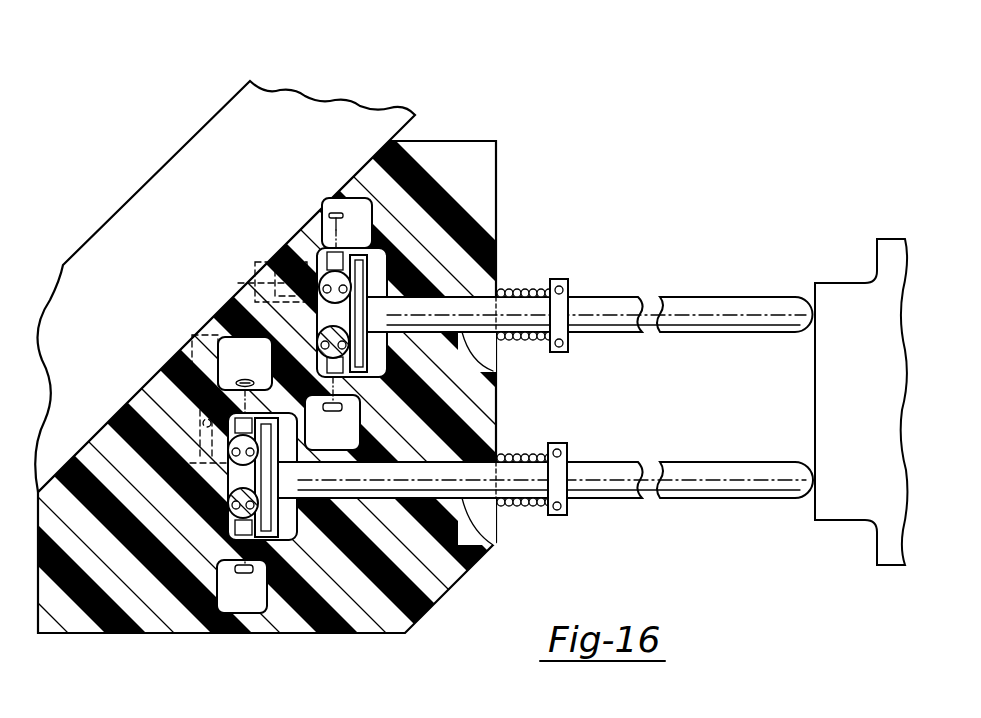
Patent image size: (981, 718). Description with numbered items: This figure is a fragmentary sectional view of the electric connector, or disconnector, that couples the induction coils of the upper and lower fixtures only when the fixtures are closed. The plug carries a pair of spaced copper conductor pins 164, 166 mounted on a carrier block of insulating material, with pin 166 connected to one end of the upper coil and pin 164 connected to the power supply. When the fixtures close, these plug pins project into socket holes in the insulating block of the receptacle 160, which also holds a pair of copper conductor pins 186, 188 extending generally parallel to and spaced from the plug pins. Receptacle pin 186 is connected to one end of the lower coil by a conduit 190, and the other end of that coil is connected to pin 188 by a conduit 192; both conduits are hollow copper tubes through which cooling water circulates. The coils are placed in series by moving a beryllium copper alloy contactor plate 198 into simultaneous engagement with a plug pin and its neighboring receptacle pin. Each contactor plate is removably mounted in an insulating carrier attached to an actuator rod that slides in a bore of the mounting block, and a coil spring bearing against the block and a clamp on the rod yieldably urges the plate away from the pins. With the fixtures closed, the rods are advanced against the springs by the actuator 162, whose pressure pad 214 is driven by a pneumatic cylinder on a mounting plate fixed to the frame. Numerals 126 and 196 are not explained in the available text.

The plate 126 is at (180, 172).
The receptacle 160 is at (434, 622).
The actuator 162 is at (874, 262).
The conductor pin 164 is at (232, 530).
The conductor pin 166 is at (330, 318).
The conductor pin 186 is at (229, 455).
The conductor pin 188 is at (332, 270).
The conduit 190 is at (190, 420).
The conduit 192 is at (245, 275).
The eccentric 196 is at (229, 504).
The contactor plate 198 is at (320, 334).
The pressure pad 214 is at (815, 395).